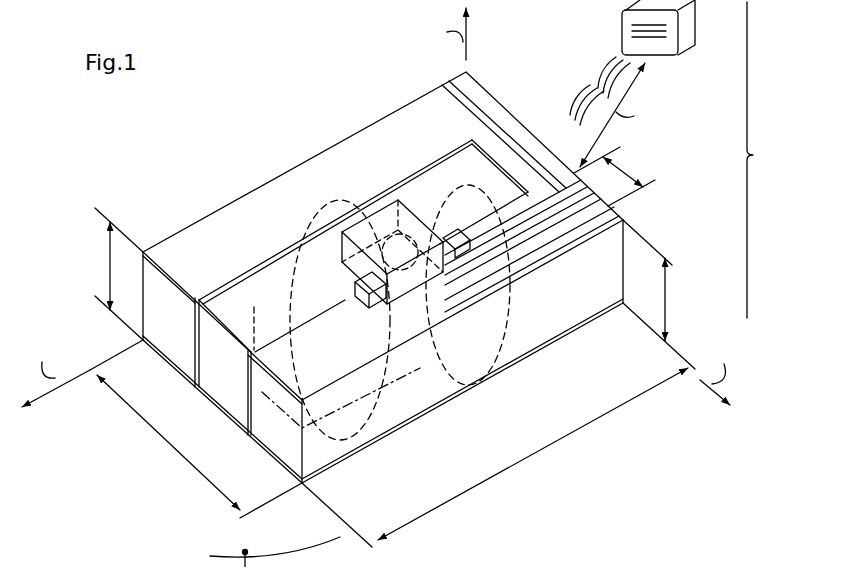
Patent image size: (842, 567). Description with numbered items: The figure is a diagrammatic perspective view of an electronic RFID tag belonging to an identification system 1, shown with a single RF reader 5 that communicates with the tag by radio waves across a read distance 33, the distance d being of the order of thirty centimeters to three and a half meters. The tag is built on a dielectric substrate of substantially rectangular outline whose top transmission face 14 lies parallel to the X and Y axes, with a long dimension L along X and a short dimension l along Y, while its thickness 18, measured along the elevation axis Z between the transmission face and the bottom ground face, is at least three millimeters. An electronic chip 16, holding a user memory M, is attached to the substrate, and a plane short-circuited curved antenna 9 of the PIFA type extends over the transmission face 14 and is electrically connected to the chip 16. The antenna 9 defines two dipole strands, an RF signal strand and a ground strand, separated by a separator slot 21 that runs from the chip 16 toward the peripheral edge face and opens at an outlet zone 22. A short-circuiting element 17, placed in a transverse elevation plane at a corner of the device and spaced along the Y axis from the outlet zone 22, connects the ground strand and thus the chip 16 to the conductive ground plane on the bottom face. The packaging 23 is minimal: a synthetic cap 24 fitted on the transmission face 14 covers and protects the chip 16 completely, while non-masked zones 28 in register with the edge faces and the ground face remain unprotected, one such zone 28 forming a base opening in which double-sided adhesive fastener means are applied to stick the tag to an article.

The electronic RFID identification system 1 is at (759, 160).
The radiofrequency reader 5 is at (621, 22).
The curved antenna 9 is at (264, 179).
The transmission face 14 is at (460, 167).
The electronic chip 16 is at (386, 236).
The short-circuiting element 17 is at (165, 318).
The thickness 18 is at (109, 274).
The separator slot 21 is at (232, 322).
The outlet zone 22 is at (248, 290).
The packaging 23 is at (143, 200).
The cap 24 is at (310, 292).
The non-masked zone 28 is at (476, 106).
The read distance 33 is at (593, 80).